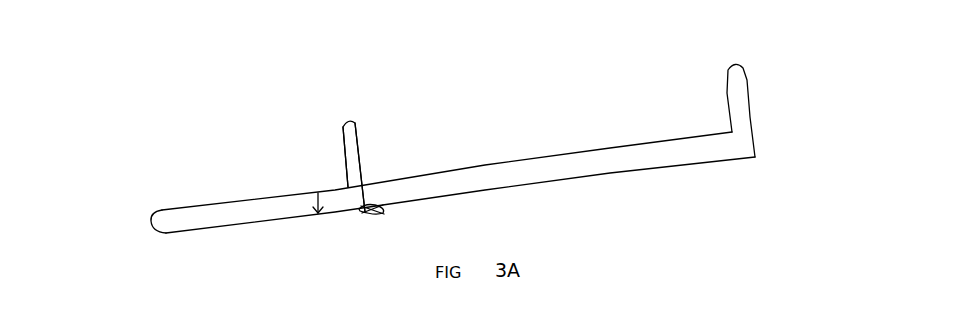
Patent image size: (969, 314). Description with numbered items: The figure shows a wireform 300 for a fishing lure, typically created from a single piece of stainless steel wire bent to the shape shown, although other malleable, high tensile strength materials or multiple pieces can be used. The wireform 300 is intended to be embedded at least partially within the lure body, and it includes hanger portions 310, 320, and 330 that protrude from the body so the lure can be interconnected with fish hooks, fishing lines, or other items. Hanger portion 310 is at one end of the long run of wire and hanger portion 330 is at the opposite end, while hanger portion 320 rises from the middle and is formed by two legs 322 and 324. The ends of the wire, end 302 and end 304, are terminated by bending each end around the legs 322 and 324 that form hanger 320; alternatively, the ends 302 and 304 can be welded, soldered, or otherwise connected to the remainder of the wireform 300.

The wireform 300 is at (461, 165).
The hanger portion 310 is at (148, 228).
The hanger portion 320 is at (362, 120).
The leg 322 is at (343, 163).
The leg 324 is at (366, 168).
The hanger portion 330 is at (738, 62).
The end 302 is at (346, 180).
The end 304 is at (393, 213).